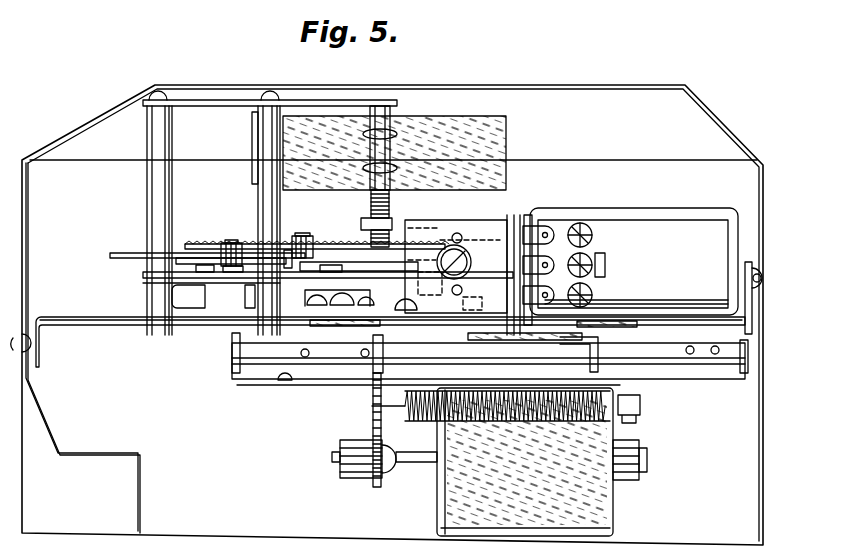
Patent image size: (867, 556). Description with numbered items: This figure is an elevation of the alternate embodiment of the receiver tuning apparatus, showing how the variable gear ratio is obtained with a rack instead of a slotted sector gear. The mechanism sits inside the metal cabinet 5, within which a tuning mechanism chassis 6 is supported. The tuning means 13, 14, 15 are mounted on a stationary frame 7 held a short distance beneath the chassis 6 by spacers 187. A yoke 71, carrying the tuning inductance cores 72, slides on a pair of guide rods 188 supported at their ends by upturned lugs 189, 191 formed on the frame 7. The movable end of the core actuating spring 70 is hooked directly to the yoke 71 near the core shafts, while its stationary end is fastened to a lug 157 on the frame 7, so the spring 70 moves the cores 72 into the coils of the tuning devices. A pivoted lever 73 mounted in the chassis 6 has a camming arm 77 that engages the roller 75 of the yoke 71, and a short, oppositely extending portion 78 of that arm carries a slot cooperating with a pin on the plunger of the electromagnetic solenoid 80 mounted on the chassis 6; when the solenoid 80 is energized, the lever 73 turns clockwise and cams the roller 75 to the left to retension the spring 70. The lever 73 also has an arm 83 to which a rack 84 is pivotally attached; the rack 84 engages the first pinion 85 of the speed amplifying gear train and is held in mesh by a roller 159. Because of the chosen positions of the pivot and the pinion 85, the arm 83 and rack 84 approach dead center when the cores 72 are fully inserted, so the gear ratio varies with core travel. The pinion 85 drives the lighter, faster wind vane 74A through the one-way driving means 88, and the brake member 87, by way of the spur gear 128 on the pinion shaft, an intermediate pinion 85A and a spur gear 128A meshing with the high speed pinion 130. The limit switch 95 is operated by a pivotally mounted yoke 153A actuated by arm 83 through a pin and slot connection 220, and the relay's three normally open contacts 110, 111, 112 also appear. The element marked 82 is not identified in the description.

The metal cabinet 5 is at (655, 88).
The tuning mechanism chassis 6 is at (66, 323).
The stationary frame 7 is at (300, 380).
The tuning means 13 is at (565, 462).
The tuning means 14 is at (525, 462).
The tuning means 15 is at (630, 460).
The core actuating spring 70 is at (426, 420).
The yoke 71 is at (373, 344).
The tuning inductance cores 72 is at (410, 468).
The pivoted lever 73 is at (330, 266).
The wind vane 74A is at (410, 117).
The roller 75 is at (547, 340).
The camming arm 77 is at (668, 286).
The oppositely extending portion 78 is at (372, 427).
The electromagnetic solenoid 80 is at (672, 212).
The gearbox inner frame 82 is at (660, 226).
The arm 83 is at (380, 270).
The rack 84 is at (118, 253).
The first pinion 85 is at (230, 241).
The intermediate pinion 85A is at (306, 234).
The brake member 87 is at (365, 221).
The one-way driving means 88 is at (389, 210).
The limit switch 95 is at (368, 298).
The relay contact 110 is at (570, 232).
The relay contact 111 is at (600, 262).
The relay contact 112 is at (600, 298).
The spur gear 128 is at (192, 243).
The spur gear 128A is at (288, 250).
The high speed pinion 130 is at (323, 231).
The pivotally mounted yoke 153A is at (188, 300).
The lug 157 is at (634, 412).
The roller 159 is at (182, 248).
The spacers 187 is at (501, 345).
The guide rods 188 is at (284, 386).
The upturned lug 189 is at (230, 368).
The upturned lug 191 is at (712, 374).
The pin and slot connection 220 is at (340, 266).